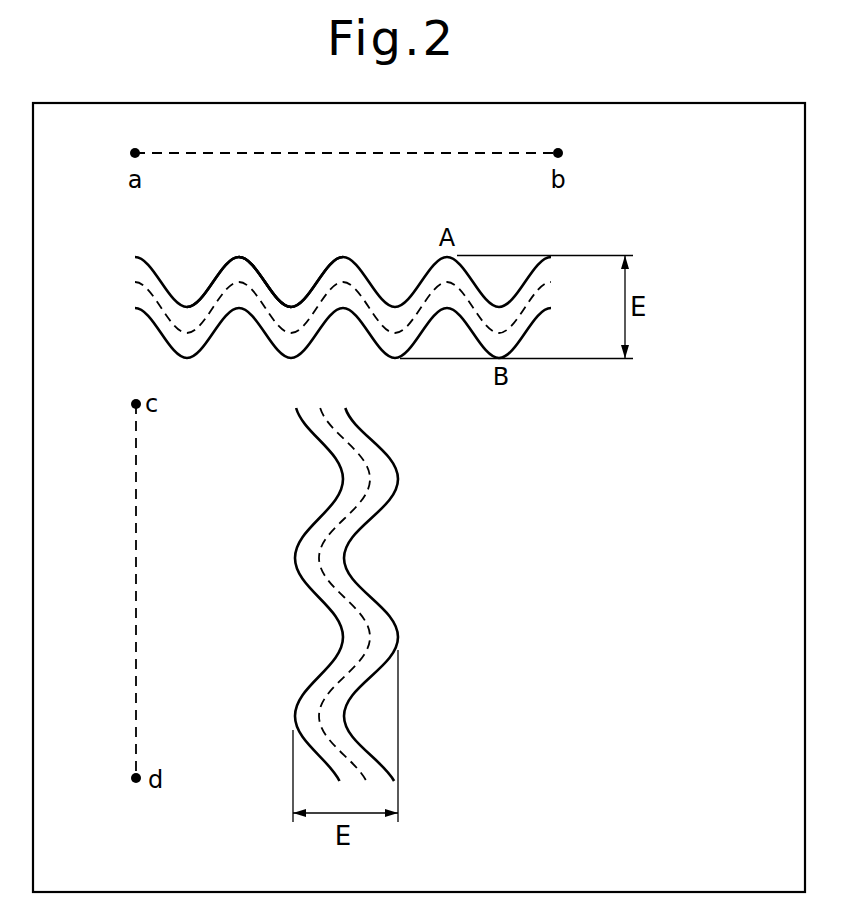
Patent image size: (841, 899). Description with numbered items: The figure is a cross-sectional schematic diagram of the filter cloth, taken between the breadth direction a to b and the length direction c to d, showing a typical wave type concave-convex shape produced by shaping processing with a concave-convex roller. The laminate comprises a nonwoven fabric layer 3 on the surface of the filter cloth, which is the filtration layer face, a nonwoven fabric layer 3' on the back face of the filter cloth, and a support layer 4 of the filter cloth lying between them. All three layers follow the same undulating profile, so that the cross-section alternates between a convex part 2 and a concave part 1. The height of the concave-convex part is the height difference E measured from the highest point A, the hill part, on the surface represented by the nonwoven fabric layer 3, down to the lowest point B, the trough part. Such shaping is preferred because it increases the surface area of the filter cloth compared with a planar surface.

The concave part 1 is at (294, 305).
The convex part 2 is at (241, 257).
The nonwoven fabric layer on the surface of filter cloth 3 is at (308, 271).
The nonwoven fabric layer on the back face of filter cloth 3' is at (309, 333).
The support layer of filter cloth 4 is at (133, 282).